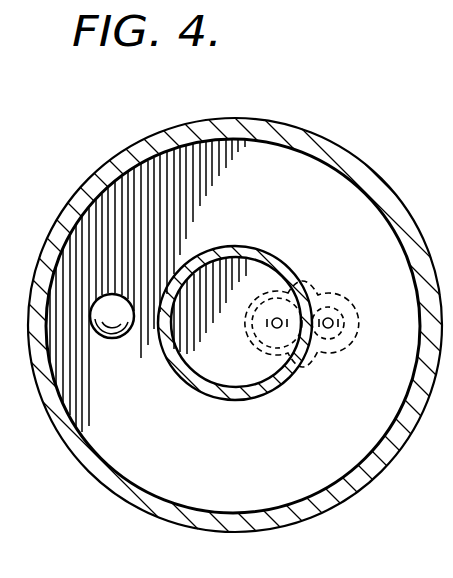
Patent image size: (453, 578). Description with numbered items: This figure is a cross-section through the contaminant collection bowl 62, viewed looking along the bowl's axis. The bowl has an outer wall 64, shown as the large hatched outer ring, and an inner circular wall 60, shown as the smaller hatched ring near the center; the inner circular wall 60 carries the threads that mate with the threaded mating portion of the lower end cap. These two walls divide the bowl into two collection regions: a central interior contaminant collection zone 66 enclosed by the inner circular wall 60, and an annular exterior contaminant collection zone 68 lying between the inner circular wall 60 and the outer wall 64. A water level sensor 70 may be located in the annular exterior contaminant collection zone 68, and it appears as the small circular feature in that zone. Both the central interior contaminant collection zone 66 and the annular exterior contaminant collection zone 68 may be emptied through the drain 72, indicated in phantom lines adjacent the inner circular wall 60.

The inner circular wall 60 is at (268, 253).
The contaminant collection bowl 62 is at (158, 127).
The outer wall 64 is at (92, 174).
The central interior contaminant collection zone 66 is at (240, 371).
The annular exterior contaminant collection zone 68 is at (304, 166).
The water level sensor 70 is at (130, 331).
The drain 72 is at (344, 258).